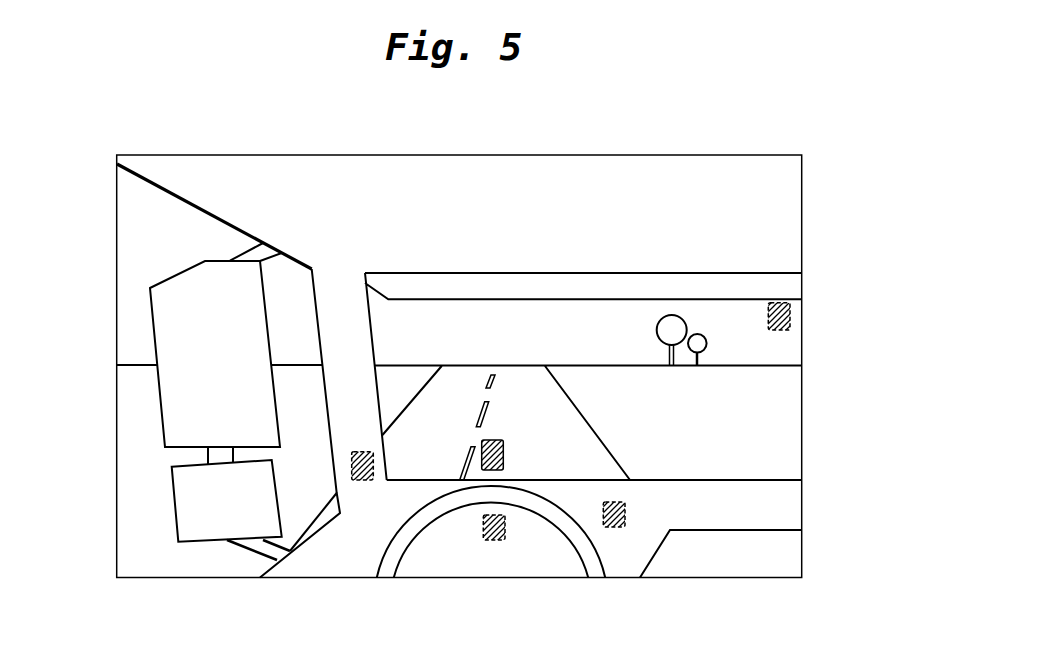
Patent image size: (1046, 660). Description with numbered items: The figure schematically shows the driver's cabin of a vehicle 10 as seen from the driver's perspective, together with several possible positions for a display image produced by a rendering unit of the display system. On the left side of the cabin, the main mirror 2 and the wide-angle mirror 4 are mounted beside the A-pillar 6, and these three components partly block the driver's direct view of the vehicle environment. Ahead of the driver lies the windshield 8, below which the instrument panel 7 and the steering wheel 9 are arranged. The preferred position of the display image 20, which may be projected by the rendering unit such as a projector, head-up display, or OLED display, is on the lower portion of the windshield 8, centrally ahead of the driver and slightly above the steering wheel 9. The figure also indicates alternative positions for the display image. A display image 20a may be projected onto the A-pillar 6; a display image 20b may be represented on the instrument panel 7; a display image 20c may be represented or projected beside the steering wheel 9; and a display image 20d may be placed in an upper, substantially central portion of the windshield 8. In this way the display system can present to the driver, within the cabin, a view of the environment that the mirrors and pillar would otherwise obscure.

The main mirror 2 is at (218, 328).
The wide-angle mirror 4 is at (205, 492).
The A-pillar 6 is at (340, 329).
The instrument panel 7 is at (468, 532).
The windshield 8 is at (705, 440).
The steering wheel 9 is at (586, 549).
The vehicle 10 is at (300, 568).
The display image 20 is at (505, 440).
The display image 20a is at (367, 483).
The display image 20b is at (500, 542).
The display image 20c is at (623, 527).
The display image 20d is at (790, 315).